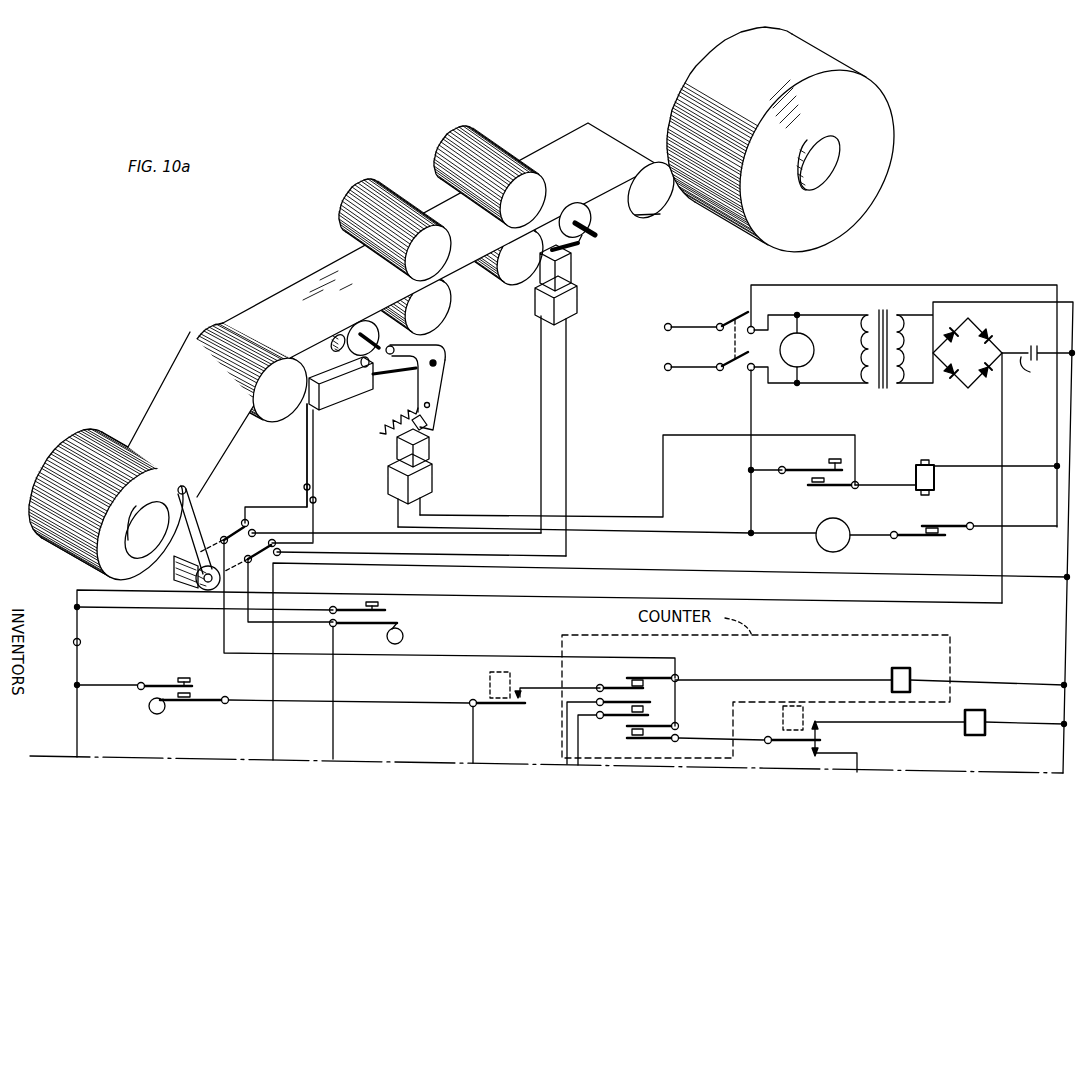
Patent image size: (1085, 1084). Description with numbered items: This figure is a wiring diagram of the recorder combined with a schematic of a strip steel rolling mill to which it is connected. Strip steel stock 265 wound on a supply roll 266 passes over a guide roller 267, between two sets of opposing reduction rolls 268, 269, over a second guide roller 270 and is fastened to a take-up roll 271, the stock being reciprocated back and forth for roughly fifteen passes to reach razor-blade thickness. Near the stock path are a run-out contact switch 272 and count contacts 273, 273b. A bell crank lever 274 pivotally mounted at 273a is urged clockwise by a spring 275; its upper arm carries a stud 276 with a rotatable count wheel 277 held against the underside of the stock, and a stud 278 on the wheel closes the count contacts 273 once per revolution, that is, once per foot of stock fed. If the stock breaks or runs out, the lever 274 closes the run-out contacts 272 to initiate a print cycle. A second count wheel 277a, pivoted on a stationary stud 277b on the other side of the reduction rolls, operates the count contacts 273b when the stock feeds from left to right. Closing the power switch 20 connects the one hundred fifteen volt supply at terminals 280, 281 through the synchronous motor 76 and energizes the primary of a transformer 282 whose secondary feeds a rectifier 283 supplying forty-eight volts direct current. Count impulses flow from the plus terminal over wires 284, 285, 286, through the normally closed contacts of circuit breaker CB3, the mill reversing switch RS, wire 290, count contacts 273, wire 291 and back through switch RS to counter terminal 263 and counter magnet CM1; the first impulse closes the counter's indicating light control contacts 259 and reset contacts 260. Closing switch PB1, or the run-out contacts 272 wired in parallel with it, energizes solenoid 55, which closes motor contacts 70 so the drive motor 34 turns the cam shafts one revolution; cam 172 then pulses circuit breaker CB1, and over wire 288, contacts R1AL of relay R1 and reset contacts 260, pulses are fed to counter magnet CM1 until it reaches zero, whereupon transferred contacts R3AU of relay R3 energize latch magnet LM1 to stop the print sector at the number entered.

The strip steel stock 265 is at (553, 141).
The supply roll 266 is at (836, 166).
The guide roller 267 is at (648, 213).
The reduction rolls 268 is at (497, 277).
The reduction rolls 269 is at (450, 301).
The second guide roller 270 is at (278, 421).
The take-up roll 271 is at (139, 552).
The run-out contact switch 272 is at (428, 440).
The count contacts 273 is at (365, 378).
The pivot 273a is at (437, 365).
The count contacts 273b is at (560, 260).
The bell crank lever 274 is at (438, 399).
The spring 275 is at (380, 433).
The stud 276 is at (398, 342).
The count wheel 277 is at (350, 335).
The second count wheel 277a is at (577, 208).
The stationary stud 277b is at (598, 235).
The stud 278 is at (330, 343).
The terminal 280 is at (753, 318).
The terminal 281 is at (750, 373).
The transformer 282 is at (880, 386).
The rectifier 283 is at (961, 381).
The wire 284 is at (1002, 404).
The wire 285 is at (603, 600).
The wire 286 is at (173, 608).
The wire 288 is at (81, 643).
The wire 290 is at (316, 501).
The wire 291 is at (303, 487).
The power switch 20 is at (733, 318).
The synchronous motor 76 is at (810, 359).
The solenoid 55 is at (936, 474).
The drive motor 34 is at (847, 542).
The motor contacts 70 is at (950, 532).
The CB1 cam 172 is at (166, 706).
The indicating light control contacts 259 is at (655, 712).
The reset contacts 260 is at (620, 684).
The counter terminal 263 is at (680, 676).
The mill reversing switch RS is at (236, 536).
The switch PB1 is at (806, 481).
The circuit breaker contacts CB1 is at (194, 690).
The circuit breaker CB3 is at (399, 615).
The relay R1 is at (490, 685).
The relay contacts R1AL is at (524, 706).
The relay R3 is at (782, 724).
The relay contacts R3AU is at (823, 741).
The counter magnet CM1 is at (892, 678).
The latch magnet LM1 is at (986, 731).